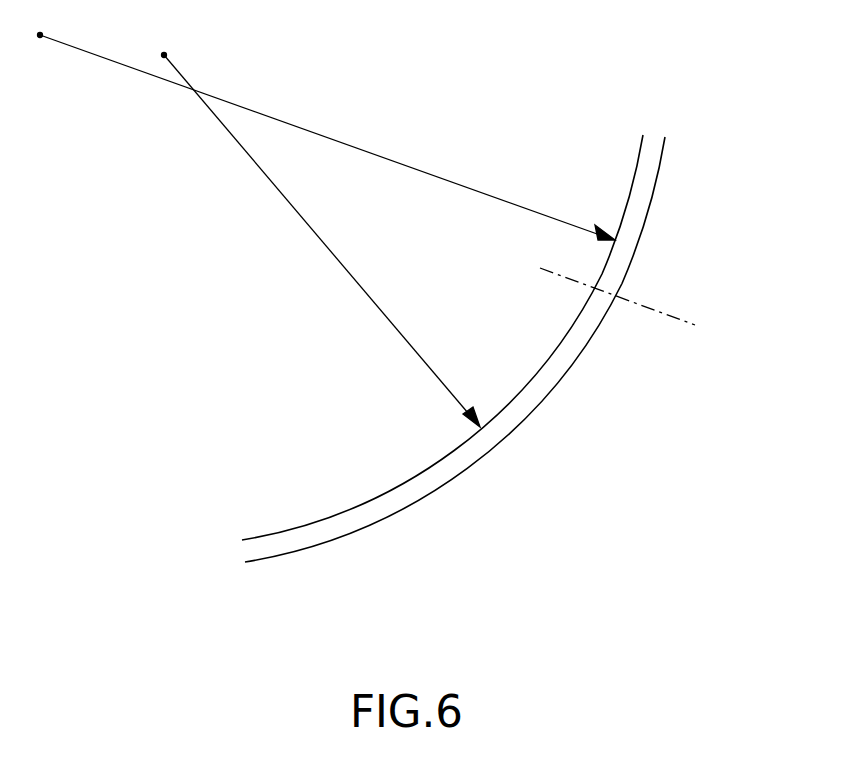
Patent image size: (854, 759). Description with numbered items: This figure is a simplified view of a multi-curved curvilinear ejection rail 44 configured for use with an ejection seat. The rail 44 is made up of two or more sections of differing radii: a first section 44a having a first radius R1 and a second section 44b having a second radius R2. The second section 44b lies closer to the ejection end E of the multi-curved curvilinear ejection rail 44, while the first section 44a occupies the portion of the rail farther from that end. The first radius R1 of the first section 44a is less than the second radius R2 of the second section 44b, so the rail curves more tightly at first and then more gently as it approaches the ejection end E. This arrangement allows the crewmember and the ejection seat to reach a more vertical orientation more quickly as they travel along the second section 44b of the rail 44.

The multi-curved curvilinear ejection rail 44 is at (527, 320).
The first section 44a is at (555, 387).
The second section 44b is at (653, 193).
The ejection end E is at (636, 172).
The first radius R1 is at (393, 322).
The second radius R2 is at (450, 178).